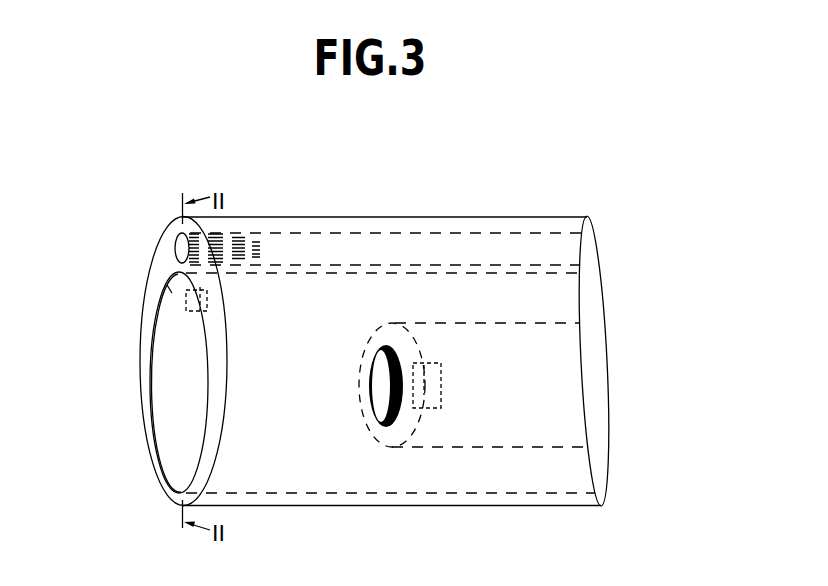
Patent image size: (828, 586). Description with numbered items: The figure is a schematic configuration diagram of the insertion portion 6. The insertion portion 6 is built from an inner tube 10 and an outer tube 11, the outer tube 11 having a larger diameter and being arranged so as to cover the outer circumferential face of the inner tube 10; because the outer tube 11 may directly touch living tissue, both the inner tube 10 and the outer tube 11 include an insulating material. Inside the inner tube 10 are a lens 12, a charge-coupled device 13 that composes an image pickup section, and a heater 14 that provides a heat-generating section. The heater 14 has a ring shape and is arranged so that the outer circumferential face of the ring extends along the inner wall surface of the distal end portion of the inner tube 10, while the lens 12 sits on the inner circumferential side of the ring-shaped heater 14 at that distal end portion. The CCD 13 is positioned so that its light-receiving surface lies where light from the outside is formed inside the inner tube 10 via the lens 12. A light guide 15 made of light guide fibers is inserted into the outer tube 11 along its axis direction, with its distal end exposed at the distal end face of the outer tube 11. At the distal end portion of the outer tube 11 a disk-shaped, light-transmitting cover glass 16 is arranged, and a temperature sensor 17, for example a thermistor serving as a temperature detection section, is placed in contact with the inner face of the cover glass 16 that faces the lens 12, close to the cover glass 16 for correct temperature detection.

The insertion portion 6 is at (401, 314).
The inner tube 10 is at (593, 428).
The outer tube 11 is at (292, 216).
The lens 12 is at (370, 389).
The charge-coupled device (CCD) 13 is at (447, 402).
The heater 14 is at (380, 445).
The light guide 15 is at (180, 242).
The cover glass 16 is at (170, 395).
The temperature sensor 17 is at (157, 281).